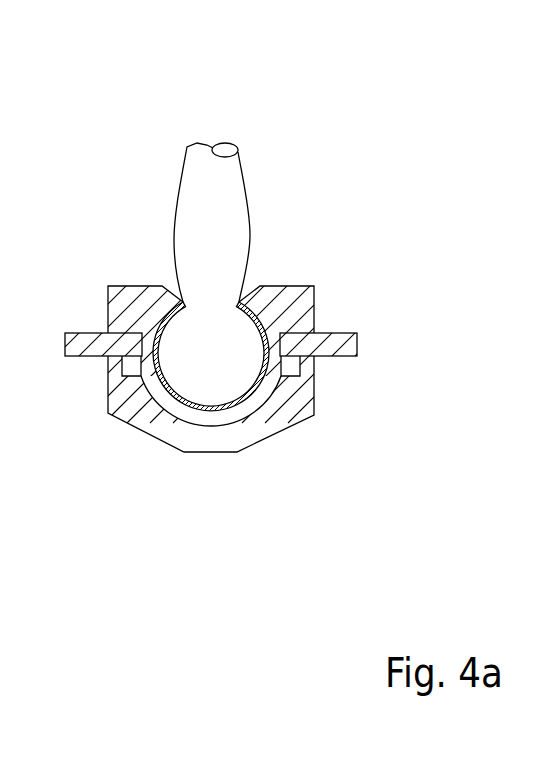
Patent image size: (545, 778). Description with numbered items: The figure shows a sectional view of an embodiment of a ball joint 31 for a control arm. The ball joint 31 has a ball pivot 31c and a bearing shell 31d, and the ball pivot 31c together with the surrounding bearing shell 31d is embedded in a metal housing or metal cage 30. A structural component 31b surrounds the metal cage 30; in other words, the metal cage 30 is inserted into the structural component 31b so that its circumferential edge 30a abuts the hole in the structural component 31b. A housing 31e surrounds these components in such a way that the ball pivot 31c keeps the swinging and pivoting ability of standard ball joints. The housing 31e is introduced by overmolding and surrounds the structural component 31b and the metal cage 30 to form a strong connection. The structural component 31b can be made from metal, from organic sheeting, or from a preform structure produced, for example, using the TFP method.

The metal cage 30 is at (242, 453).
The circumferential edge 30a is at (318, 496).
The ball joint 31 is at (292, 157).
The structural component 31b is at (91, 483).
The ball pivot 31c is at (180, 169).
The bearing shell 31d is at (347, 196).
The housing 31e is at (130, 496).